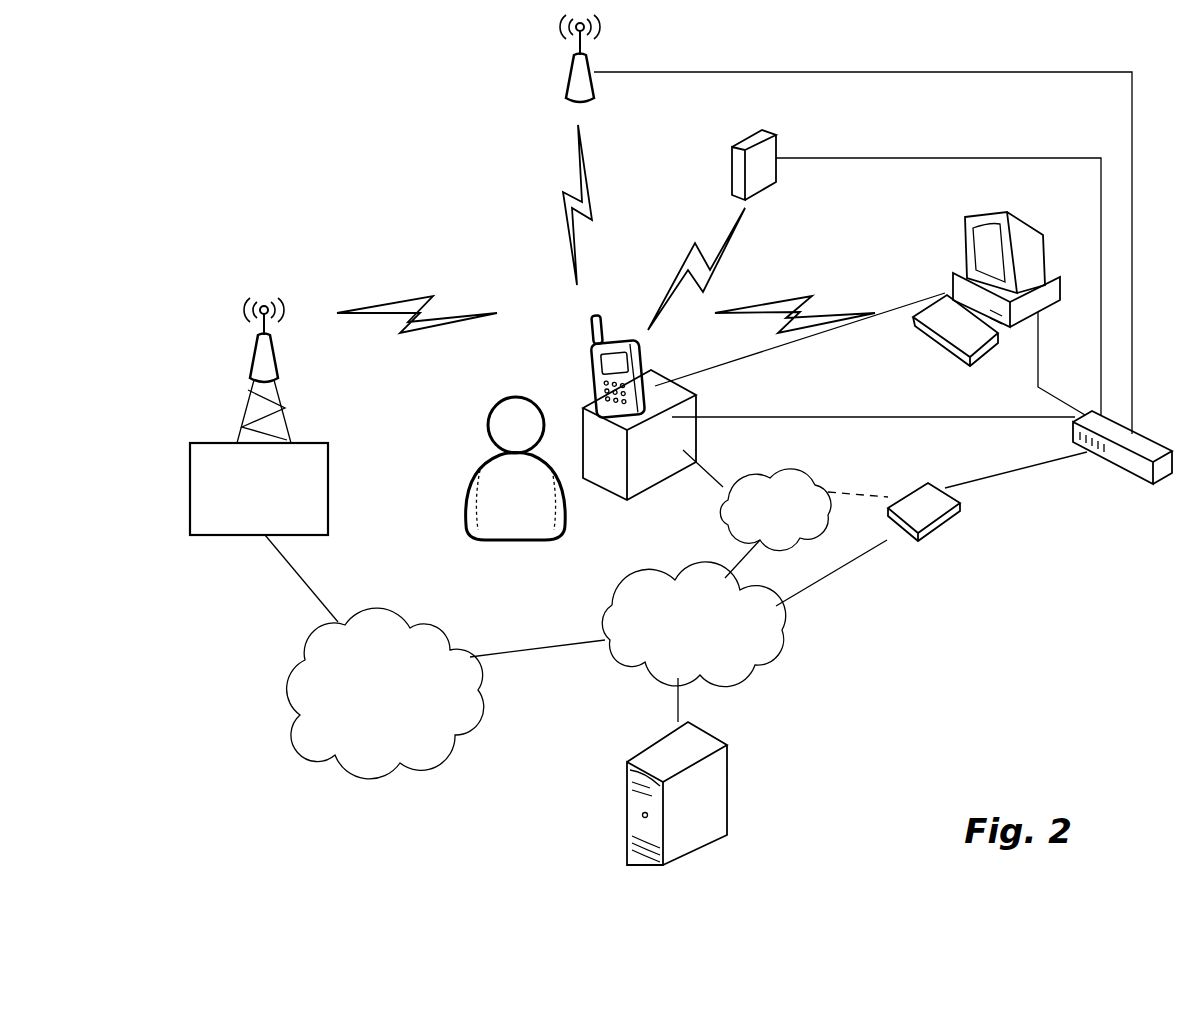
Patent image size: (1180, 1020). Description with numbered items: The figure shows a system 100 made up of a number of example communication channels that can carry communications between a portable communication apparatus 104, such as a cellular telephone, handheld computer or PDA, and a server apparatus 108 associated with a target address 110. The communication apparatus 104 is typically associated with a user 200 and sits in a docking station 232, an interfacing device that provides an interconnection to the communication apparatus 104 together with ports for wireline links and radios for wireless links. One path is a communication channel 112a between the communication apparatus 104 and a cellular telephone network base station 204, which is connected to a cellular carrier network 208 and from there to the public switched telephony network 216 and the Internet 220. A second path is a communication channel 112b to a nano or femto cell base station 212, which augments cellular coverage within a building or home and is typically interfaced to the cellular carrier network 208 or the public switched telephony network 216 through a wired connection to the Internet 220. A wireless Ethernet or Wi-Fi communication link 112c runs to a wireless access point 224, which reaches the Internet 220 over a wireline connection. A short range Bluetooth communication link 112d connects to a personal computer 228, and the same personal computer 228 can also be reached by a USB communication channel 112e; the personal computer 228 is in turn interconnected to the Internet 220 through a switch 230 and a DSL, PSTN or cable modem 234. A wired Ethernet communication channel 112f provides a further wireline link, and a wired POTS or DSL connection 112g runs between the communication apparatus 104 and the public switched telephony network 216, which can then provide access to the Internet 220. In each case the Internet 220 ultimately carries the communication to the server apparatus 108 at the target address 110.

The system 100 is at (329, 100).
The communication apparatus 104 is at (575, 362).
The server apparatus 108 is at (731, 815).
The target address 110 is at (742, 892).
The communication channel 112a is at (390, 306).
The communication channel 112b is at (568, 232).
The communication link 112c is at (708, 270).
The communication link 112d is at (755, 316).
The USB communication channel 112e is at (838, 331).
The wired Ethernet communication channel 112f is at (820, 417).
The POTS or DSL connection 112g is at (710, 478).
The user 200 is at (462, 487).
The cellular telephone network base station 204 is at (210, 536).
The cellular carrier network 208 is at (386, 763).
The nano or femto cell base station 212 is at (567, 78).
The public switched telephony network 216 is at (790, 478).
The Internet 220 is at (622, 656).
The wireless access point 224 is at (745, 145).
The personal computer 228 is at (965, 247).
The switch 230 is at (1132, 467).
The docking station 232 is at (604, 492).
The modem 234 is at (942, 513).